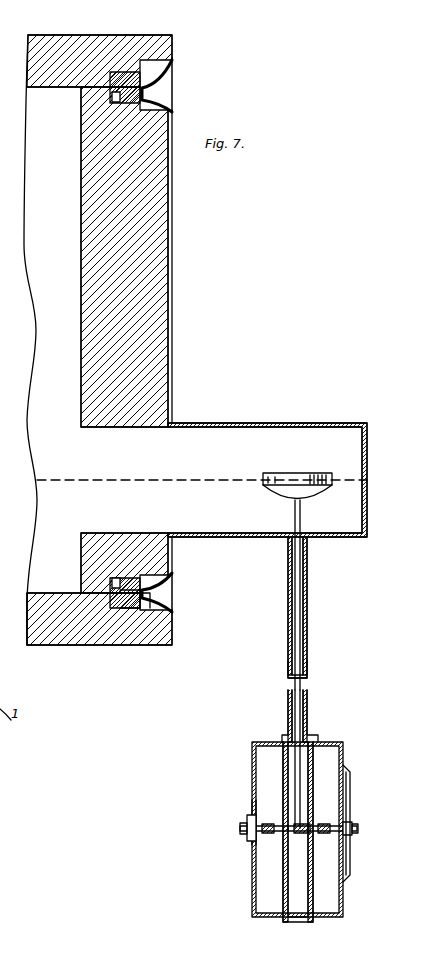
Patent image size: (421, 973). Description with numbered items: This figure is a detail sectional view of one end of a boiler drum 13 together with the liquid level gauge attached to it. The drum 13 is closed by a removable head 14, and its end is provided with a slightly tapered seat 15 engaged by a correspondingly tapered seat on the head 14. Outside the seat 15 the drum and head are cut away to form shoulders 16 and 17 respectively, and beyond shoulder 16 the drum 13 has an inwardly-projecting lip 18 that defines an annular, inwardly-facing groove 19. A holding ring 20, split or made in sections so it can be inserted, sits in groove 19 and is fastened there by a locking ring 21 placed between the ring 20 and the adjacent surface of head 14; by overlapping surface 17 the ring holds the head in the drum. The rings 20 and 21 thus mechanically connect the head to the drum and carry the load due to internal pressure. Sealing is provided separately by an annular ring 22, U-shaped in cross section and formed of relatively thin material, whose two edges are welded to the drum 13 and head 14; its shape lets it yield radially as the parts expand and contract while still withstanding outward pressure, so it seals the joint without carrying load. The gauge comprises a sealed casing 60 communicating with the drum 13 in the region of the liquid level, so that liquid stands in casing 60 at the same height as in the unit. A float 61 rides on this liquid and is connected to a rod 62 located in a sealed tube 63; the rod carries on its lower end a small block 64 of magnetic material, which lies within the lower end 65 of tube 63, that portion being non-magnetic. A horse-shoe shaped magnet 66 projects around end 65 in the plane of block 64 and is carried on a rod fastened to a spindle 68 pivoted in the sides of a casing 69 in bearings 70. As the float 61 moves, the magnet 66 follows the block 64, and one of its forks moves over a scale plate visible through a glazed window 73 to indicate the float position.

The drum 13 is at (82, 45).
The head 14 is at (167, 296).
The tapered seat 15 is at (90, 598).
The shoulder 16 is at (108, 604).
The shoulder 17 is at (114, 584).
The inwardly-projecting lip 18 is at (160, 613).
The annular inwardly-facing groove 19 is at (147, 612).
The holding ring 20 is at (124, 606).
The locking ring 21 is at (152, 90).
The annular sealing ring 22 is at (152, 97).
The sealed casing 60 is at (247, 424).
The float 61 is at (291, 478).
The rod 62 is at (297, 636).
The sealed tube 63 is at (289, 645).
The block of magnetic material 64 is at (297, 832).
The lower end of tube 65 is at (283, 872).
The horse-shoe shaped magnet 66 is at (272, 823).
The spindle 68 is at (252, 814).
The casing 69 is at (252, 762).
The bearings 70 is at (240, 828).
The glazed window 73 is at (346, 858).